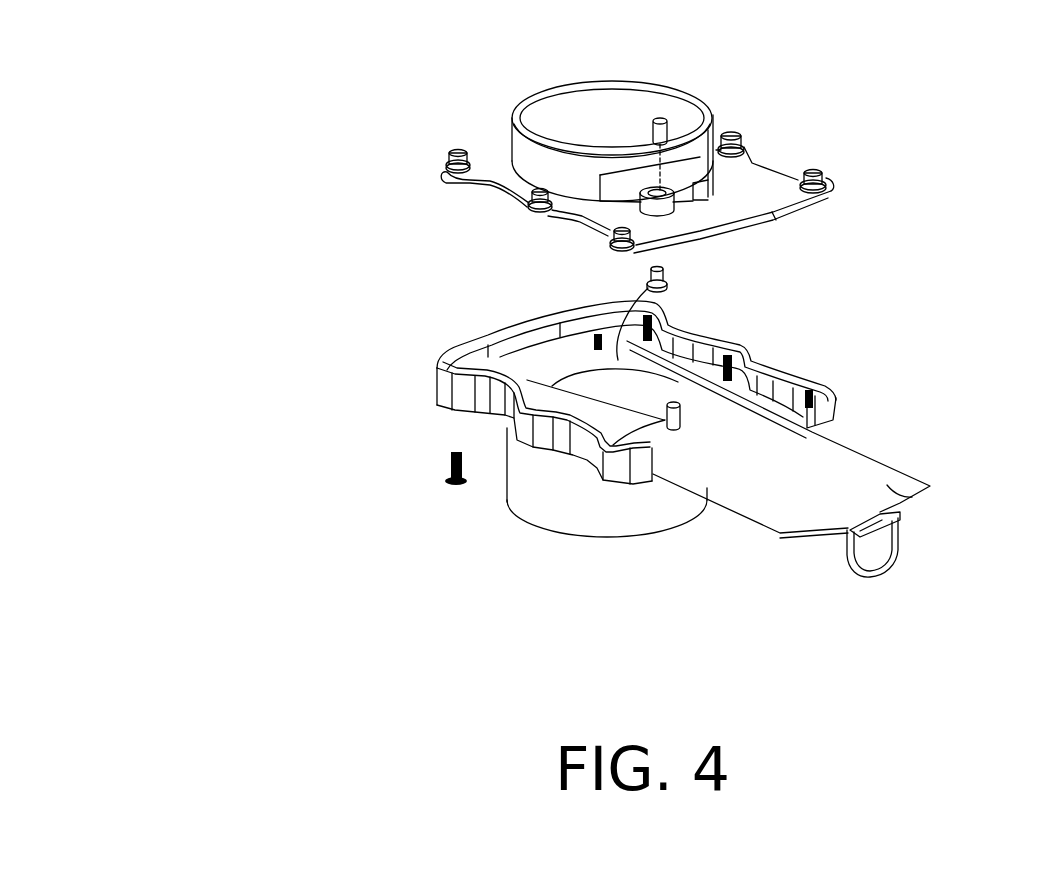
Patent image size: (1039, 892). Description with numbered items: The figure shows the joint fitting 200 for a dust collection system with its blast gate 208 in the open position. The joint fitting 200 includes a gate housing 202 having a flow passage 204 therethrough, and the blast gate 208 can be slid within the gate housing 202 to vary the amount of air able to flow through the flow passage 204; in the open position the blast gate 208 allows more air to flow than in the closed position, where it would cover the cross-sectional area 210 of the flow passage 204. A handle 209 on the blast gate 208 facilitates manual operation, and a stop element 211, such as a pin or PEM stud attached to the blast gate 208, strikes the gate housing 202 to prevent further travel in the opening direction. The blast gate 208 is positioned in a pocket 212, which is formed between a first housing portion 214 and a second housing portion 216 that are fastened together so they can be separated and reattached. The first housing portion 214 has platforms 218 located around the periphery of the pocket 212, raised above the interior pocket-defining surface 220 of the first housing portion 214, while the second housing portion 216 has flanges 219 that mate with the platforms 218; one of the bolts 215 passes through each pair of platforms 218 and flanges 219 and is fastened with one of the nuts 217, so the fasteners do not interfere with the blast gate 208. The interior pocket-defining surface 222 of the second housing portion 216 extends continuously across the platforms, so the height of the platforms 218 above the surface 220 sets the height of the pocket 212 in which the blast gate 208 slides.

The joint fitting 200 is at (316, 388).
The gate housing 202 is at (487, 335).
The flow passage 204 is at (602, 562).
The blast gate 208 is at (932, 490).
The handle 209 is at (878, 548).
The cross-sectional area 210 is at (613, 443).
The stop element 211 is at (455, 352).
The pocket 212 is at (597, 340).
The first housing portion 214 is at (530, 488).
The bolts 215 is at (448, 478).
The second housing portion 216 is at (713, 120).
The nuts 217 is at (454, 157).
The platforms 218 is at (673, 327).
The flanges 219 is at (447, 180).
The interior pocket-defining surface 220 is at (664, 269).
The interior pocket-defining surface 222 is at (582, 248).